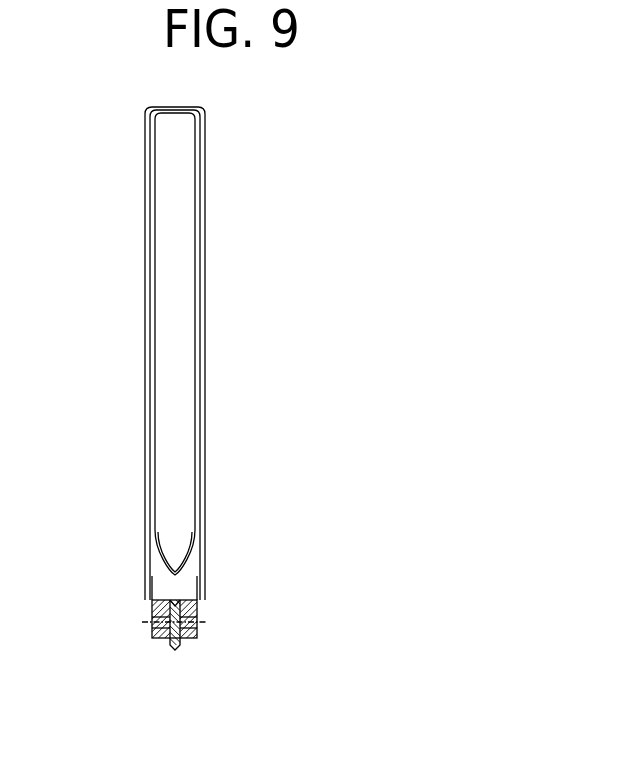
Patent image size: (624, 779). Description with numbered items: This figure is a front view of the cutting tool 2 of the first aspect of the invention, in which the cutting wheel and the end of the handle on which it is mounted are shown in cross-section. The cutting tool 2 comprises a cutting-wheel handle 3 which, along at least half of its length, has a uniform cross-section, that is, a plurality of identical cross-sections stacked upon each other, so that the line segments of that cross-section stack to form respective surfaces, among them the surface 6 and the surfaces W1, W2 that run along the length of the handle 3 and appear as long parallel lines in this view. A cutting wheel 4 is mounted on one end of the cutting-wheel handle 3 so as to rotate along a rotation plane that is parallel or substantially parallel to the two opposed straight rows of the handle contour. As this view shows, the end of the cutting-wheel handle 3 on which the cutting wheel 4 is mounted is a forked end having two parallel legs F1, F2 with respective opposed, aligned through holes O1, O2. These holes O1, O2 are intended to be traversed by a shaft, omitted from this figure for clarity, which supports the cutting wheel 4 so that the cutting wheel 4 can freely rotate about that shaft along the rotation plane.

The cutting tool 2 is at (203, 352).
The cutting-wheel handle 3 is at (138, 511).
The cutting wheel 4 is at (179, 667).
The surface 6 is at (172, 423).
The surface W1 is at (148, 322).
The surface W2 is at (203, 320).
The through hole O1 is at (152, 618).
The through hole O2 is at (197, 618).
The leg F1 is at (152, 638).
The leg F2 is at (197, 638).